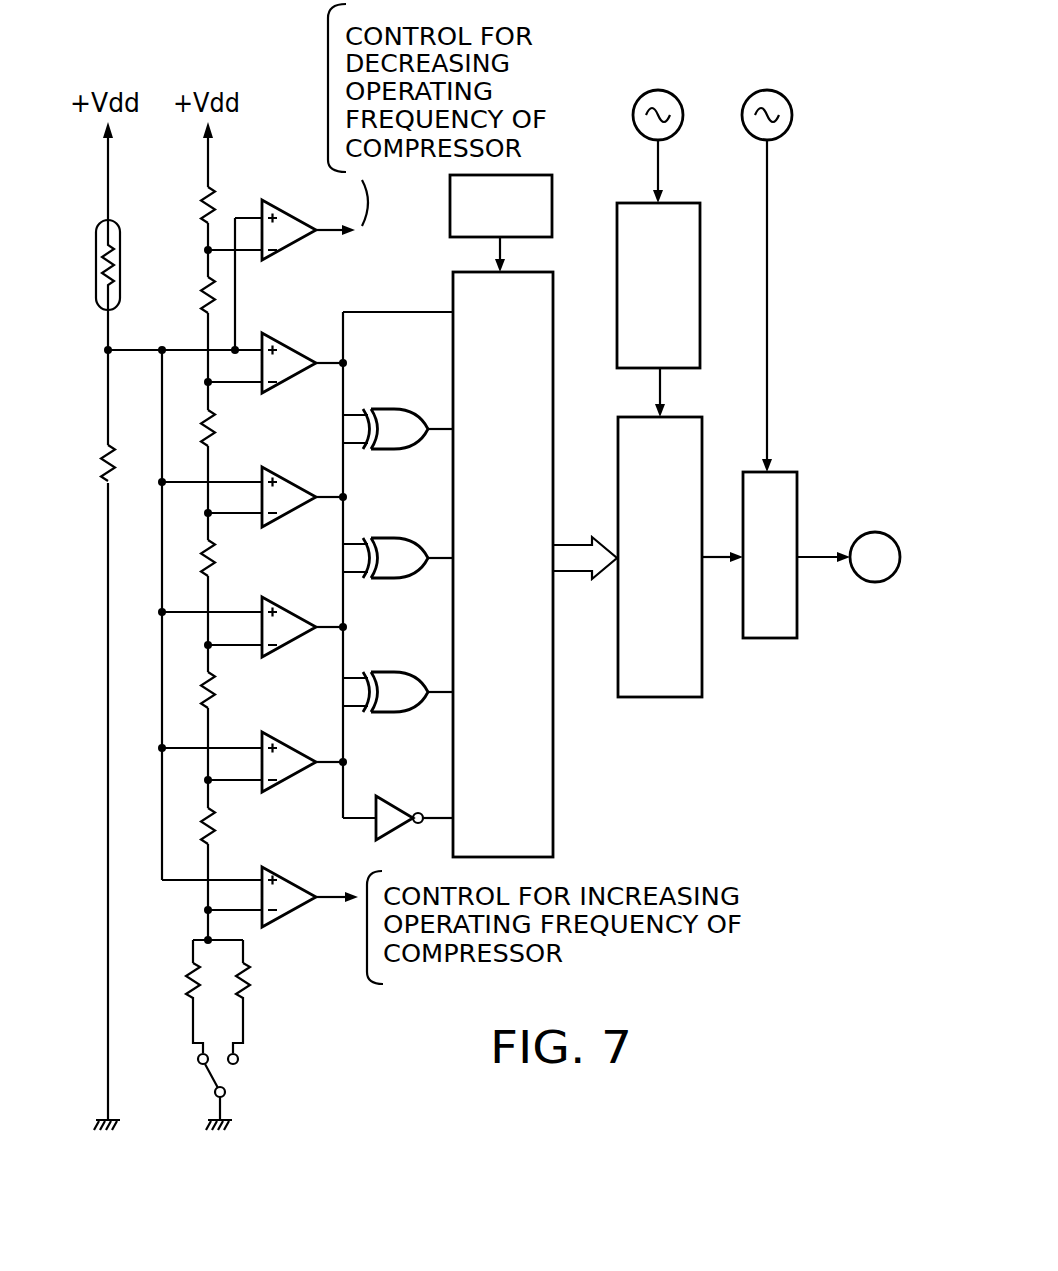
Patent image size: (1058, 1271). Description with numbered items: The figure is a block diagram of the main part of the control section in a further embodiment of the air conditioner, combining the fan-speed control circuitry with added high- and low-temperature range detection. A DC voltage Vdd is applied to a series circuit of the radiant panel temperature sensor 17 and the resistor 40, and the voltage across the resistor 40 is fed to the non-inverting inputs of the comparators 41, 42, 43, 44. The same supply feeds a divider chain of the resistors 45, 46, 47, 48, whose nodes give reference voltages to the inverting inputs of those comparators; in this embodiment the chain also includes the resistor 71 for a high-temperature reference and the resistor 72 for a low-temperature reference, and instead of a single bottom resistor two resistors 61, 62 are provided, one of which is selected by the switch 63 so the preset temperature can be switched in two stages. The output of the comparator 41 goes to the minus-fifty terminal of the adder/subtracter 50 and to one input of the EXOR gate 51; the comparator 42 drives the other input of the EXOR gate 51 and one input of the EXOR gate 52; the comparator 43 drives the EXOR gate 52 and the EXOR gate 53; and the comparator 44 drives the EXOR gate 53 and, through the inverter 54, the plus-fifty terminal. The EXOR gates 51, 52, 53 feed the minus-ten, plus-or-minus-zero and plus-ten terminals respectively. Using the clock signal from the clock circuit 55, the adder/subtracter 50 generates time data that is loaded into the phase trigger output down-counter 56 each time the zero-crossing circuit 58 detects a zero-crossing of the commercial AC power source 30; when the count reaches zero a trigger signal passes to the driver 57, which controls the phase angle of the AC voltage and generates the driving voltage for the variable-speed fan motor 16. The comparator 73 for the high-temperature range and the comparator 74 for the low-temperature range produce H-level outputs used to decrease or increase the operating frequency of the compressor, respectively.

The variable-speed fan motor 16 is at (872, 532).
The radiant panel temperature sensor 17 is at (121, 241).
The commercial AC power source 30 is at (660, 92).
The resistor 40 is at (104, 462).
The comparator 41 is at (291, 341).
The comparator 42 is at (294, 475).
The comparator 43 is at (294, 605).
The comparator 44 is at (294, 740).
The resistor 45 is at (201, 294).
The resistor 46 is at (216, 430).
The resistor 47 is at (216, 560).
The resistor 48 is at (216, 692).
The adder/subtracter 50 is at (553, 305).
The EXOR gate 51 is at (400, 408).
The EXOR gate 52 is at (402, 537).
The EXOR gate 53 is at (405, 671).
The inverter 54 is at (398, 805).
The clock circuit 55 is at (552, 205).
The phase trigger output down-counter 56 is at (668, 697).
The driver 57 is at (773, 638).
The zero-crossing circuit 58 is at (680, 212).
The resistor 61 is at (186, 980).
The resistor 62 is at (250, 980).
The switch 63 is at (226, 1070).
The resistor 71 is at (200, 202).
The resistor 72 is at (216, 828).
The comparator 73 is at (291, 208).
The comparator 74 is at (294, 875).